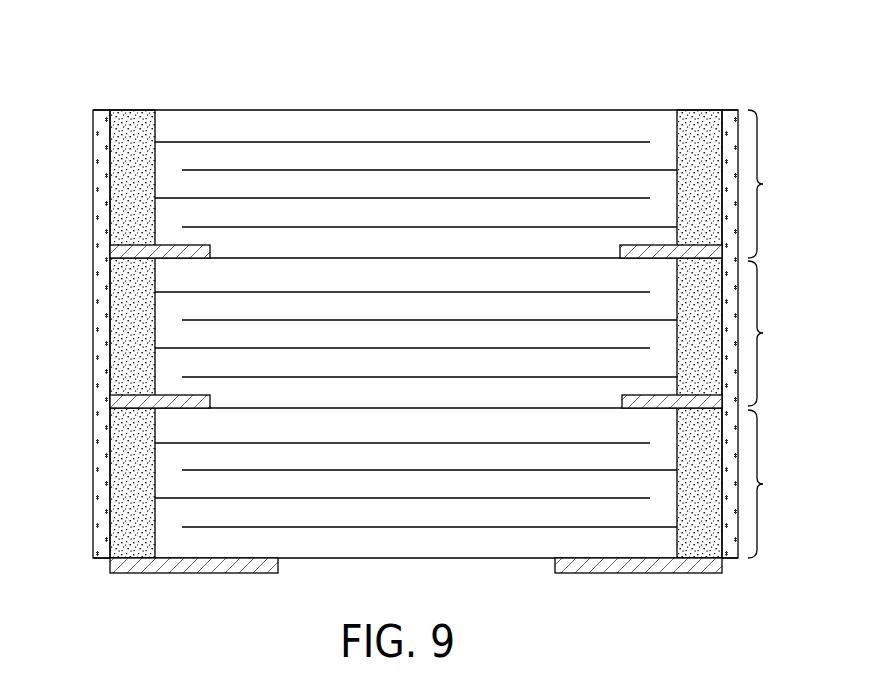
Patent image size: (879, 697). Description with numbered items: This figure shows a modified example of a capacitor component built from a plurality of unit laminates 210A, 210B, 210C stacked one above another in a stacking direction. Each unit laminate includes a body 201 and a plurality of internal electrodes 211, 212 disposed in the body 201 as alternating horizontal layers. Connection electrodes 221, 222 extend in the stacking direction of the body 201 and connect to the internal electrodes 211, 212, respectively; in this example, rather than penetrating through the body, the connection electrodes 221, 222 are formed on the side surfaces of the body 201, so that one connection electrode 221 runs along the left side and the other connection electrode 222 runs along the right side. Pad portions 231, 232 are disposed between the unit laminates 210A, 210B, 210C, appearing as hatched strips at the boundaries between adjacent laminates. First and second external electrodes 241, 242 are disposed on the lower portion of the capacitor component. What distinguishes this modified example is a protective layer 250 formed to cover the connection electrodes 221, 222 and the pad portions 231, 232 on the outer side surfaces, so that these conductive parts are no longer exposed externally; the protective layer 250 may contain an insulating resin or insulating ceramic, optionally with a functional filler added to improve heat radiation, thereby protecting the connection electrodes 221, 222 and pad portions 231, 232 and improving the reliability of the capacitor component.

The body 201 is at (477, 118).
The internal electrode 211 is at (173, 141).
The internal electrode 212 is at (195, 170).
The connection electrode 221 is at (132, 110).
The connection electrode 222 is at (697, 110).
The pad portion 231 is at (120, 252).
The pad portion 232 is at (637, 252).
The first external electrode 241 is at (177, 575).
The second external electrode 242 is at (668, 575).
The protective layer 250 is at (731, 112).
The unit laminate 210A is at (788, 484).
The unit laminate 210B is at (788, 333).
The unit laminate 210C is at (788, 184).